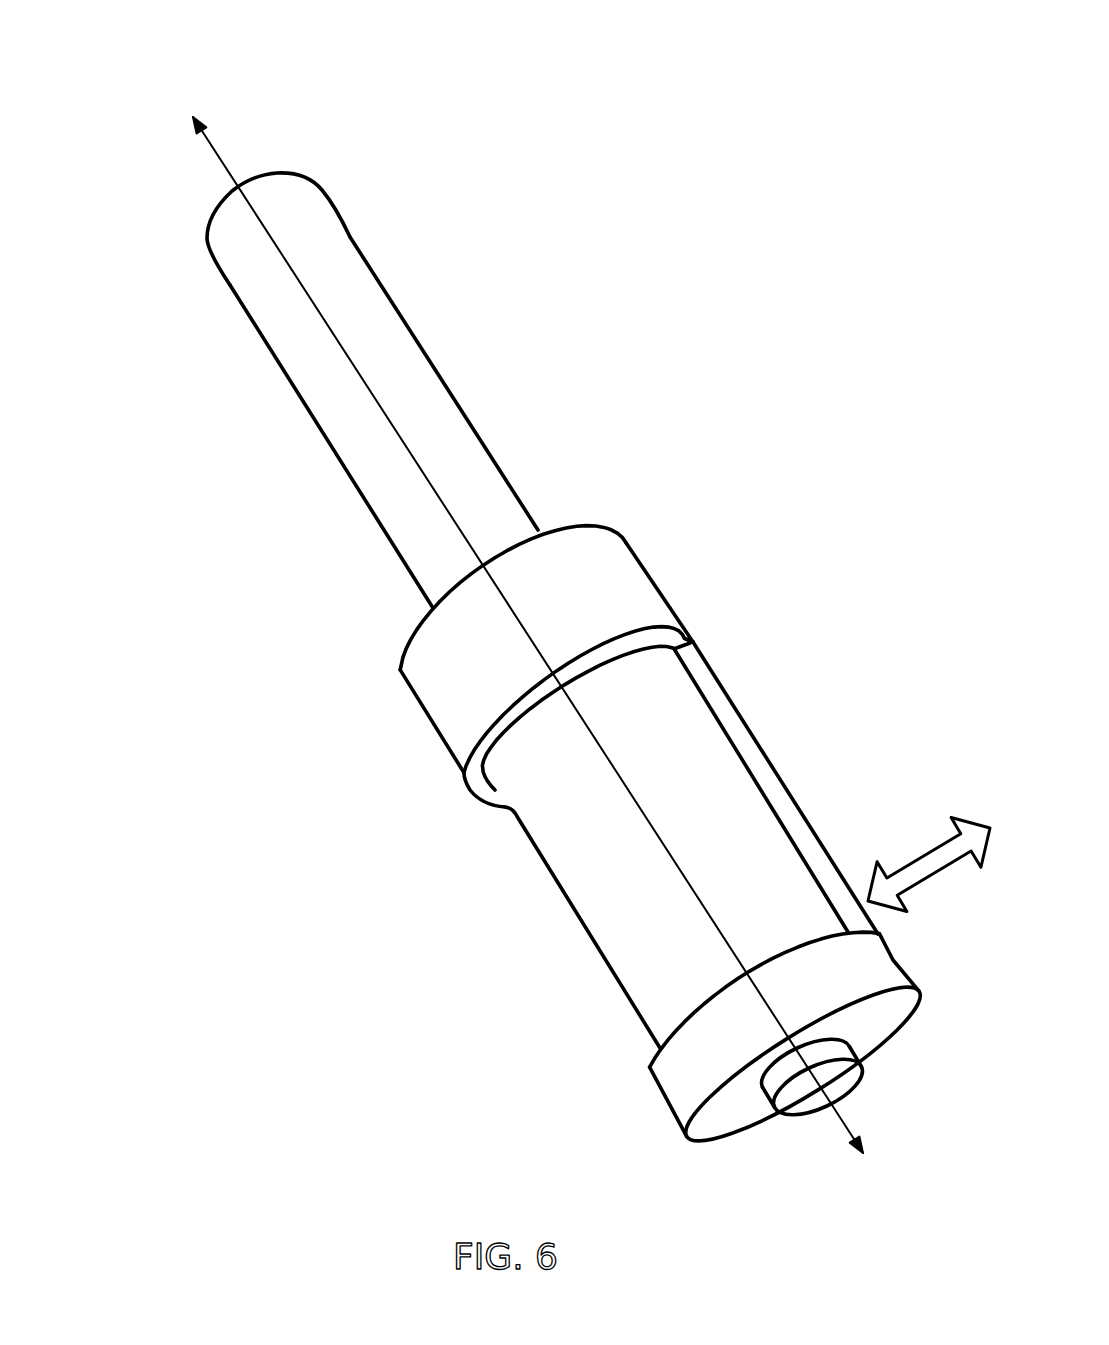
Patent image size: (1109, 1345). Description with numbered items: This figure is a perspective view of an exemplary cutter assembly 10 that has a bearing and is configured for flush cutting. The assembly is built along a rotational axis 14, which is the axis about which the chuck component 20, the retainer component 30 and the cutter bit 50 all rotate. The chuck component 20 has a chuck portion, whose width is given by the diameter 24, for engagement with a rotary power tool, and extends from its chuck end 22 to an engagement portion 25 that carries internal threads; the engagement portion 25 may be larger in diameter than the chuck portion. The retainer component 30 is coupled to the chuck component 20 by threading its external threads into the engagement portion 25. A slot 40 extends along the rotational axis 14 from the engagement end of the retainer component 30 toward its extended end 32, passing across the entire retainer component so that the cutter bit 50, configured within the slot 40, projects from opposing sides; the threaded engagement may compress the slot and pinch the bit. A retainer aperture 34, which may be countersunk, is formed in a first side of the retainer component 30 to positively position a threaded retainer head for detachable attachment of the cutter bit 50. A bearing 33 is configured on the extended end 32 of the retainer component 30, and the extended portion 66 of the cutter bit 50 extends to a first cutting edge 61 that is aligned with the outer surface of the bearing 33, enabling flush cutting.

The cutter assembly 10 is at (165, 90).
The rotational axis 14 is at (847, 1113).
The chuck component 20 is at (317, 390).
The chuck end 22 is at (464, 774).
The diameter of the chuck portion 24 is at (206, 246).
The engagement portion 25 is at (514, 665).
The retainer component 30 is at (683, 833).
The extended end 32 is at (703, 1117).
The bearing 33 is at (677, 1068).
The retainer aperture 34 is at (796, 776).
The slot 40 is at (740, 753).
The cutter bit 50 is at (796, 776).
The first cutting edge 61 is at (785, 780).
The extended portion 66 is at (735, 722).